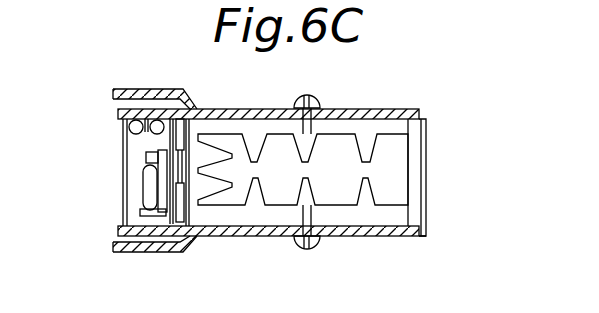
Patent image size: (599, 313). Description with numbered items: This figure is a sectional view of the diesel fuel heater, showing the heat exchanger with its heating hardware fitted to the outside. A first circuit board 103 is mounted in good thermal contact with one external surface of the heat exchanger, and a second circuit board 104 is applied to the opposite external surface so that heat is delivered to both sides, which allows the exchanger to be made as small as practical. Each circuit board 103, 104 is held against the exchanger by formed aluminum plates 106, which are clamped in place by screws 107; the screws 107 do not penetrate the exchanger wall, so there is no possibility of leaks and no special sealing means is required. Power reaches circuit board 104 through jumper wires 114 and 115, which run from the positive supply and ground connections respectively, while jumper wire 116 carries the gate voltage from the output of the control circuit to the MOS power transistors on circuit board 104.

The circuit board 103 is at (424, 117).
The circuit board 104 is at (421, 233).
The formed aluminum plates 106 is at (387, 106).
The screws 107 is at (313, 96).
The jumper wire 114 is at (167, 195).
The jumper wire 115 is at (190, 123).
The jumper wire 116 is at (122, 166).